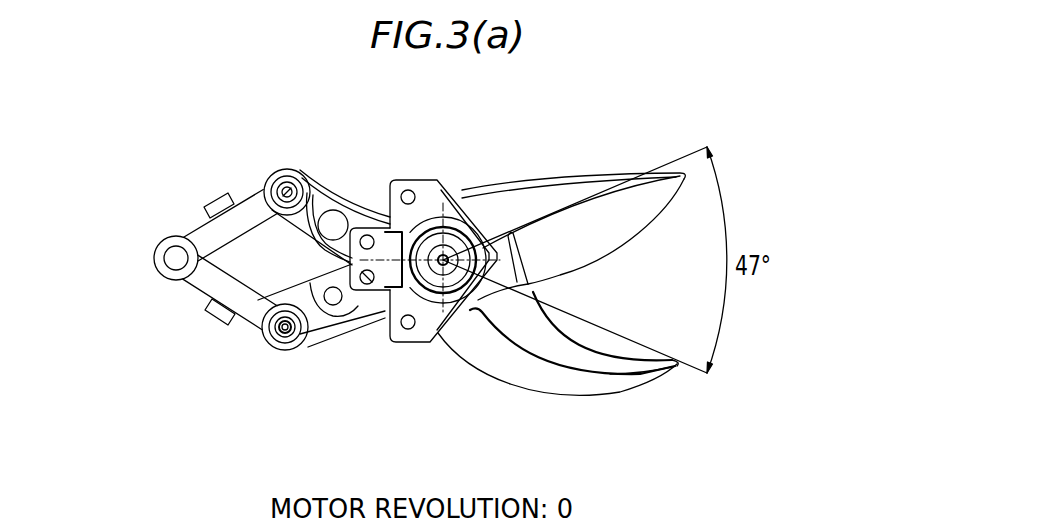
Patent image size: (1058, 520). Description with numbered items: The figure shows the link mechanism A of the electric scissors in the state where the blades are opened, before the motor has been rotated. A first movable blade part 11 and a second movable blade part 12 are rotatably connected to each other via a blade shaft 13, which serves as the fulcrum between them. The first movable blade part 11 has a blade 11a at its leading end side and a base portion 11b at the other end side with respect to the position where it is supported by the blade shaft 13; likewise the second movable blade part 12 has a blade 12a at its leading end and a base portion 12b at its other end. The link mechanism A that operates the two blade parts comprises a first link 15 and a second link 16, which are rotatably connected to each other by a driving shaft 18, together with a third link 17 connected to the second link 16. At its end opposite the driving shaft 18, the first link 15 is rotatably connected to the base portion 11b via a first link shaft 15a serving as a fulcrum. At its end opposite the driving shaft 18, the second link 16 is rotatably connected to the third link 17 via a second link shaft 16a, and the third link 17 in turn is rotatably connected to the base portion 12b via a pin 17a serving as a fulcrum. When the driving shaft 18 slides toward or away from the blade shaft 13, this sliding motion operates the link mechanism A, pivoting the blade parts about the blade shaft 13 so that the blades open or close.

The first movable blade part 11 is at (513, 176).
The blade 11a is at (622, 213).
The base portion 11b is at (327, 200).
The second movable blade part 12 is at (538, 403).
The blade 12a is at (598, 364).
The base portion 12b is at (371, 300).
The blade shaft 13 is at (443, 258).
The first link 15 is at (220, 207).
The first link shaft 15a is at (282, 187).
The second link 16 is at (227, 293).
The second link shaft 16a is at (280, 350).
The third link 17 is at (318, 327).
The pin 17a is at (335, 306).
The driving shaft 18 is at (170, 252).
The link mechanism A is at (182, 393).